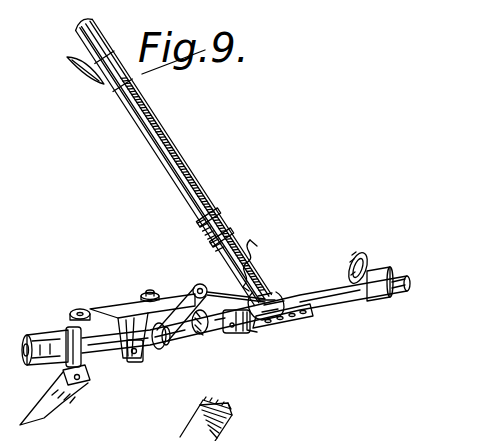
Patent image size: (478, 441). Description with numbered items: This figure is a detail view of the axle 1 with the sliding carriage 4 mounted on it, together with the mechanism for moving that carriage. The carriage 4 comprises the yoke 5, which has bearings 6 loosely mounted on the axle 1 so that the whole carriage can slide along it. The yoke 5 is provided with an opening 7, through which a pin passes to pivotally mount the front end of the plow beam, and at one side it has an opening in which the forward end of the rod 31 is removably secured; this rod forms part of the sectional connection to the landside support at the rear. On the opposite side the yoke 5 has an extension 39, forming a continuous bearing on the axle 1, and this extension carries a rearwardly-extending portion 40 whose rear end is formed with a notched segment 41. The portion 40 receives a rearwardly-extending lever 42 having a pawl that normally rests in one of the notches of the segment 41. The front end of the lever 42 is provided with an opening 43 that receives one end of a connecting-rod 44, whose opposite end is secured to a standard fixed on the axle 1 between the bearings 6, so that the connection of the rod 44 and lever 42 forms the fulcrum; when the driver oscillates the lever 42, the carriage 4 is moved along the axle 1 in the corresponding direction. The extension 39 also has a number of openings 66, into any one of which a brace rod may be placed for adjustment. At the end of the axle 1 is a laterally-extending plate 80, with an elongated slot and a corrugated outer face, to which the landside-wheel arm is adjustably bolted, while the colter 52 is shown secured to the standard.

The axle 1 is at (337, 303).
The carriage 4 is at (146, 290).
The yoke 5 is at (118, 312).
The bearings 6 is at (131, 353).
The opening 7 is at (153, 290).
The rod 31 is at (178, 438).
The extension 39 is at (294, 324).
The rearwardly-extending portion 40 is at (238, 262).
The notched segment 41 is at (204, 246).
The lever 42 is at (171, 146).
The opening 43 is at (273, 294).
The connecting-rod 44 is at (231, 309).
The colter 52 is at (77, 311).
The openings 66 is at (309, 318).
The laterally-extending plate 80 is at (378, 269).